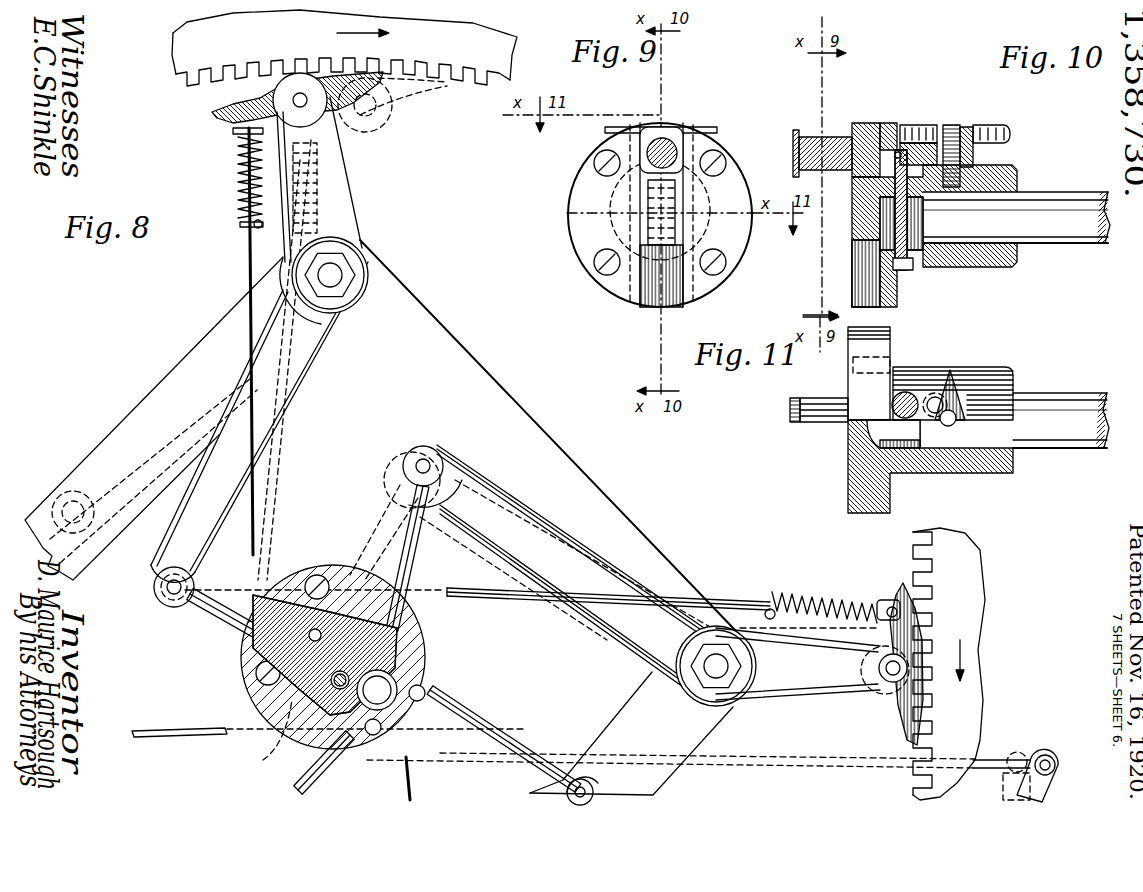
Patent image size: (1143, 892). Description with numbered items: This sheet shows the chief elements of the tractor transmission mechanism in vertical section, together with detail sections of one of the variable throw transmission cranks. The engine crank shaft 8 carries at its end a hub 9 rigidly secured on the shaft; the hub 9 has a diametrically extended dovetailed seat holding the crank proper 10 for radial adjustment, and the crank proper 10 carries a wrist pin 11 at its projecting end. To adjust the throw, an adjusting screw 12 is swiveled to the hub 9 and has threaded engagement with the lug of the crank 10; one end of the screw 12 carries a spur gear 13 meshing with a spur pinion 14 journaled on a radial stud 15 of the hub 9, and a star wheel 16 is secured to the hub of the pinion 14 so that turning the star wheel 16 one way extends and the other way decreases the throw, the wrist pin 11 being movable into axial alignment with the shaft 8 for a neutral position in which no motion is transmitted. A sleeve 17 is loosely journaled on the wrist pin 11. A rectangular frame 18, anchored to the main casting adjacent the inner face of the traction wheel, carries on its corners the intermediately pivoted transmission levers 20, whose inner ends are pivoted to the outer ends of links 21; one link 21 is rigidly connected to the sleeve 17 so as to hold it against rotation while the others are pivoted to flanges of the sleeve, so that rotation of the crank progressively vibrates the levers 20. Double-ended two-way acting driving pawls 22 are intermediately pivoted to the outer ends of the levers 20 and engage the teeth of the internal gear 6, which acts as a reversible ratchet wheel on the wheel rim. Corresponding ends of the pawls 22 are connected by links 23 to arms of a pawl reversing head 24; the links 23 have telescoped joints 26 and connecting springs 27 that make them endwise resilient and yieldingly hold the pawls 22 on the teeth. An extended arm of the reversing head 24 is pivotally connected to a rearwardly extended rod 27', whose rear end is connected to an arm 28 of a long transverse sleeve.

In FIG. 8, the internal gear 6 is at (220, 66).
In FIG. 10, the crank shaft 8 is at (1067, 230).
In FIG. 11, the crank shaft 8 is at (1033, 437).
In FIG. 8, the hub 9 is at (230, 660).
In FIG. 9, the hub 9 is at (673, 305).
In FIG. 10, the hub 9 is at (972, 262).
In FIG. 11, the hub 9 is at (867, 490).
In FIG. 8, the crank proper 10 is at (320, 633).
In FIG. 9, the crank proper 10 is at (640, 202).
In FIG. 10, the crank proper 10 is at (858, 122).
In FIG. 11, the crank proper 10 is at (847, 427).
In FIG. 8, the wrist pin 11 is at (383, 707).
In FIG. 9, the wrist pin 11 is at (650, 152).
In FIG. 10, the wrist pin 11 is at (818, 145).
In FIG. 11, the wrist pin 11 is at (808, 408).
In FIG. 10, the adjusting screw 12 is at (896, 217).
In FIG. 11, the adjusting screw 12 is at (905, 395).
In FIG. 10, the spur gear 13 is at (920, 143).
In FIG. 11, the spur gear 13 is at (930, 395).
In FIG. 10, the spur pinion 14 is at (970, 150).
In FIG. 11, the spur pinion 14 is at (987, 390).
In FIG. 10, the radial stud 15 is at (953, 122).
In FIG. 11, the radial stud 15 is at (950, 428).
In FIG. 9, the star wheel 16 is at (703, 130).
In FIG. 10, the star wheel 16 is at (1007, 133).
In FIG. 11, the star wheel 16 is at (952, 387).
In FIG. 8, the sleeve 17 is at (423, 675).
In FIG. 8, the polygonal frame 18 is at (127, 427).
In FIG. 8, the transmission lever 20 is at (297, 387).
In FIG. 8, the link 21 is at (230, 623).
In FIG. 8, the driving pawl 22 is at (333, 80).
In FIG. 8, the link 23 is at (247, 273).
In FIG. 8, the pawl reversing head 24 is at (263, 760).
In FIG. 8, the telescoped joint 26 is at (233, 193).
In FIG. 8, the connecting spring 27 is at (534, 380).
In FIG. 8, the rearwardly extended rod 27' is at (601, 744).
In FIG. 8, the arm 28 is at (1043, 787).